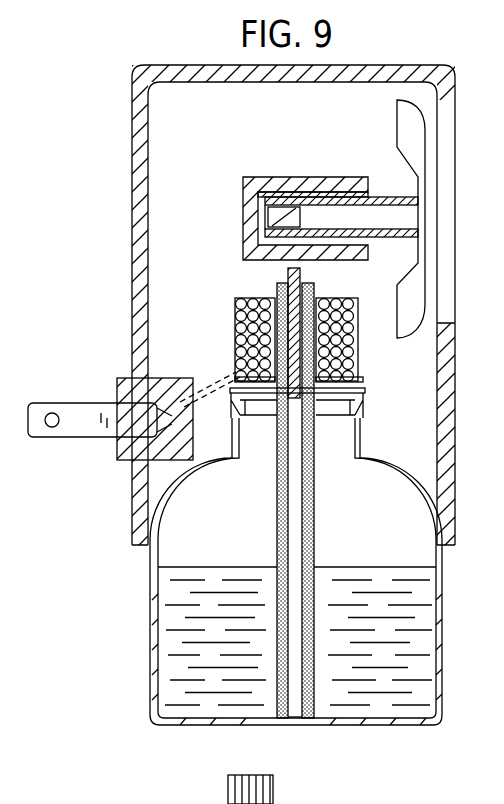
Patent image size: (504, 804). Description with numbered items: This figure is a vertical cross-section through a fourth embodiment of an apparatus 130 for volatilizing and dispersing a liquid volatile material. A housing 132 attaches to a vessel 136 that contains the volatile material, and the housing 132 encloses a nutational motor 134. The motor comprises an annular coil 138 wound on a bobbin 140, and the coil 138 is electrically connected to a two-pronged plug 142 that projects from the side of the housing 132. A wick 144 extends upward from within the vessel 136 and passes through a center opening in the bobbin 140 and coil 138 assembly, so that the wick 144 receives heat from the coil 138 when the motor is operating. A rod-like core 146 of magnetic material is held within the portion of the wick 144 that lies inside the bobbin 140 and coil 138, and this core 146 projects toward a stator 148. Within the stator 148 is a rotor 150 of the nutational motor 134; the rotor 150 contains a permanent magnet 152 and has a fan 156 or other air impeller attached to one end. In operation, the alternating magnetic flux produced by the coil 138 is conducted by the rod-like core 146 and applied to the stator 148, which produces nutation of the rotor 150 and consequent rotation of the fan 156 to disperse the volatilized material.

The apparatus 130 is at (120, 640).
The housing 132 is at (132, 155).
The nutational motor 134 is at (206, 200).
The vessel 136 is at (152, 574).
The annular coil 138 is at (236, 326).
The bobbin 140 is at (254, 297).
The two-pronged plug 142 is at (92, 412).
The wick 144 is at (318, 512).
The rod-like core 146 is at (299, 280).
The stator 148 is at (356, 186).
The rotor 150 is at (302, 200).
The permanent magnet 152 is at (302, 212).
The fan 156 is at (407, 121).